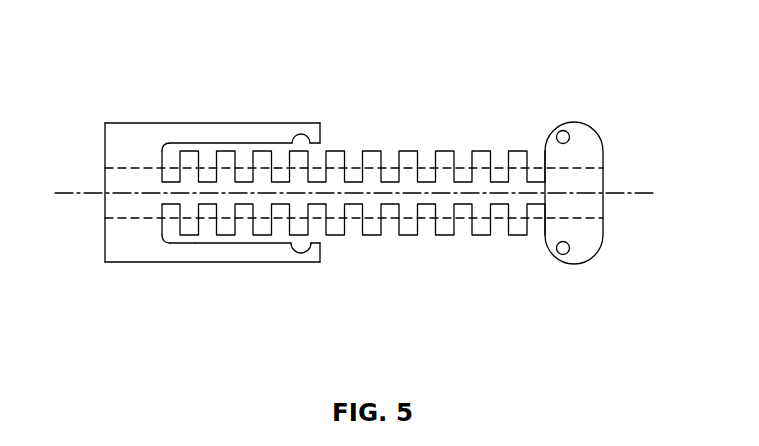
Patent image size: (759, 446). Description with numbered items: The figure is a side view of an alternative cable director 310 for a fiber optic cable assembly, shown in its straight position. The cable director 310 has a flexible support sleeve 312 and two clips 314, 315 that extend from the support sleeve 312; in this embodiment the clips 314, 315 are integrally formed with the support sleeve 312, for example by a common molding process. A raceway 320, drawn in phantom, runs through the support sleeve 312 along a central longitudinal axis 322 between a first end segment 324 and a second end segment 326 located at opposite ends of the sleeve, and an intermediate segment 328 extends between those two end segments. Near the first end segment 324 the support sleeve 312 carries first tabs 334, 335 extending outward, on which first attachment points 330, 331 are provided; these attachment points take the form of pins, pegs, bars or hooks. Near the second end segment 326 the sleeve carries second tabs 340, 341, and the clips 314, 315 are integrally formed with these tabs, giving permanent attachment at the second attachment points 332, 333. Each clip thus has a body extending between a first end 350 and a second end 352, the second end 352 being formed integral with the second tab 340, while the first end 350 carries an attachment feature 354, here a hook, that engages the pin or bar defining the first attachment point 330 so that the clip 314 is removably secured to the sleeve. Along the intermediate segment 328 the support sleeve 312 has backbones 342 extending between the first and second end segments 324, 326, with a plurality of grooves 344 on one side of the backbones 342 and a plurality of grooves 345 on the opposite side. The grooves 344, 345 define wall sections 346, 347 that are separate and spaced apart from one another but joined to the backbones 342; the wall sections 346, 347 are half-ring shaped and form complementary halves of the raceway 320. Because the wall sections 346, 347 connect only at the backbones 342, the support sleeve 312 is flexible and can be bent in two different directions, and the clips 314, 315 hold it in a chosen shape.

The cable director 310 is at (167, 77).
The support sleeve 312 is at (592, 183).
The clip 314 is at (231, 250).
The clip 315 is at (230, 141).
The raceway 320 is at (587, 205).
The central longitudinal axis 322 is at (68, 196).
The first end segment 324 is at (591, 132).
The second end segment 326 is at (115, 279).
The intermediate segment 328 is at (412, 138).
The first attachment point 330 is at (564, 256).
The first attachment point 331 is at (564, 129).
The second attachment point 332 is at (165, 244).
The second attachment point 333 is at (165, 147).
The first tab 334 is at (585, 245).
The first tab 335 is at (585, 150).
The second tab 340 is at (113, 249).
The second tab 341 is at (115, 142).
The backbones 342 is at (388, 201).
The grooves 344 is at (462, 237).
The grooves 345 is at (462, 156).
The wall sections 346 is at (481, 229).
The wall sections 347 is at (480, 152).
The first end 350 is at (321, 253).
The second end 352 is at (173, 251).
The attachment feature 354 is at (292, 257).